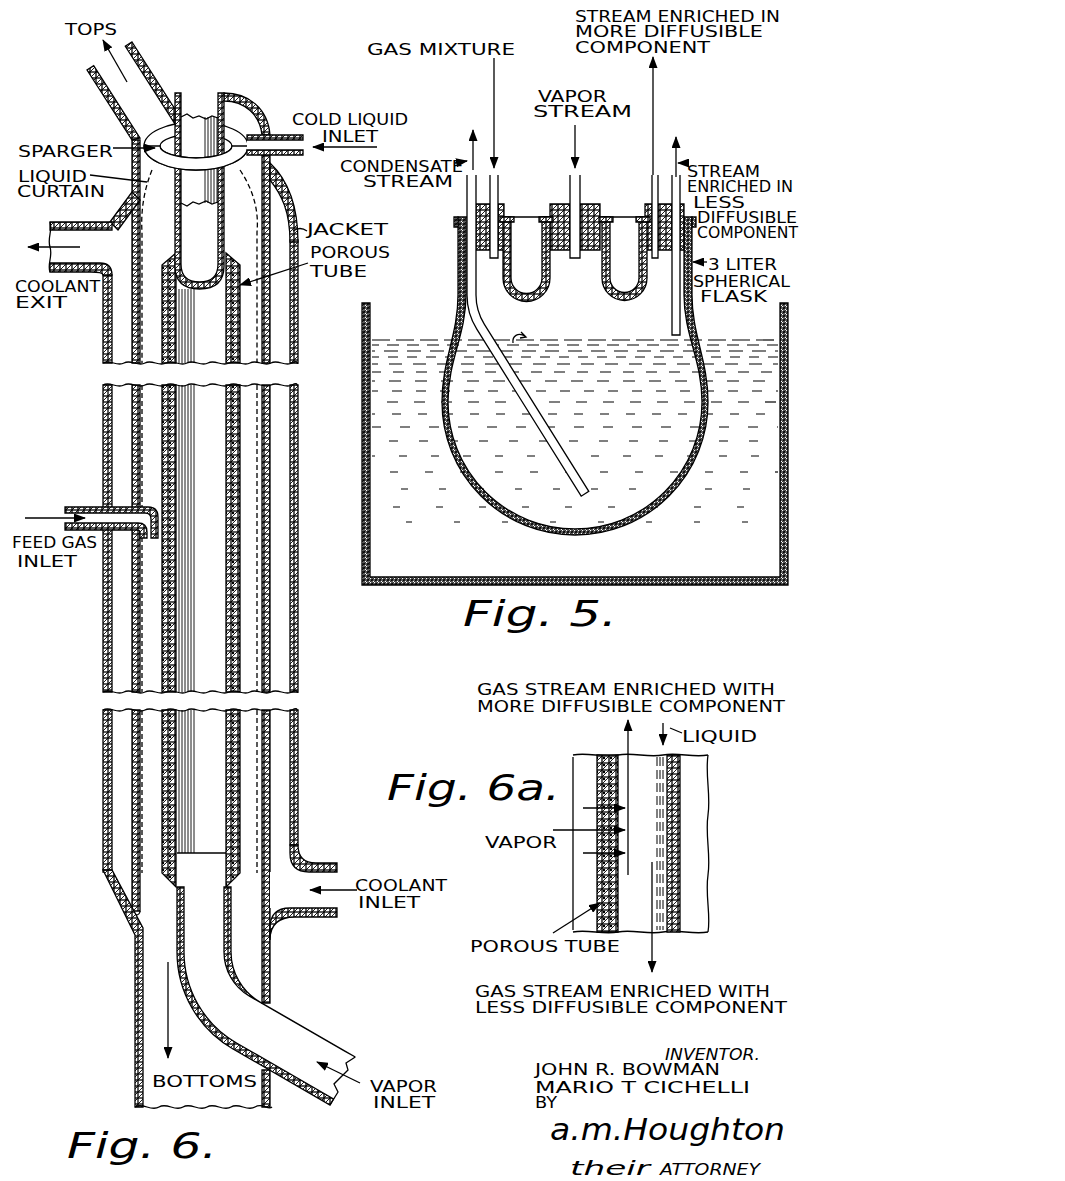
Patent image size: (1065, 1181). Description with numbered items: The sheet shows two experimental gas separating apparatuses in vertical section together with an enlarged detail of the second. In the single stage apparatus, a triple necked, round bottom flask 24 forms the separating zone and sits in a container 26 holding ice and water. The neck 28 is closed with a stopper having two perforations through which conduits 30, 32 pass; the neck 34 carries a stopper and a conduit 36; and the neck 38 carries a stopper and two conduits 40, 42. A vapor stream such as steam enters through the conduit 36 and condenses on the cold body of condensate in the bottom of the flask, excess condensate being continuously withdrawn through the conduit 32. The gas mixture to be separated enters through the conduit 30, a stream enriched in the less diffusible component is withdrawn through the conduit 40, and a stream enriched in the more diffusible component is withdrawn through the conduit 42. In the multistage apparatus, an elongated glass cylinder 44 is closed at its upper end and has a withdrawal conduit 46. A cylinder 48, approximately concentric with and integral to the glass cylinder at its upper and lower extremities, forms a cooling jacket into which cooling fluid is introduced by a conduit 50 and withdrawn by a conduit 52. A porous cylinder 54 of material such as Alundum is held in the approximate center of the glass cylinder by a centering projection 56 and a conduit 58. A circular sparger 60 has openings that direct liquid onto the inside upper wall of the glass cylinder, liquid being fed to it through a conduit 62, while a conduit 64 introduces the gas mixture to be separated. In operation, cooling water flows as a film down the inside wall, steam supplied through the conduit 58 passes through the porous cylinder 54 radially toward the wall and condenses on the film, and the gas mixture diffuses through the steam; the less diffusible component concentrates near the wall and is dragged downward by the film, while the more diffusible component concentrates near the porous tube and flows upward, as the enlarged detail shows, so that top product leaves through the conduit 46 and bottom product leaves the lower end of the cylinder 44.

In FIG. 5, the triple necked round bottom flask 24 is at (694, 313).
In FIG. 5, the container 26 is at (362, 418).
In FIG. 5, the neck 28 is at (526, 259).
In FIG. 5, the conduit 30 is at (498, 190).
In FIG. 5, the conduit 32 is at (470, 187).
In FIG. 5, the neck 34 is at (624, 259).
In FIG. 5, the conduit 36 is at (580, 183).
In FIG. 5, the neck 38 is at (692, 249).
In FIG. 5, the conduit 40 is at (672, 190).
In FIG. 5, the conduit 42 is at (652, 201).
In FIG. 6, the elongated glass cylinder 44 is at (267, 539).
In FIG. 6A, the elongated glass cylinder 44 is at (680, 813).
In FIG. 6, the withdrawal conduit 46 is at (148, 58).
In FIG. 6, the cylinder 48 is at (300, 742).
In FIG. 6, the conduit 50 is at (328, 866).
In FIG. 6, the conduit 52 is at (60, 230).
In FIG. 6, the porous cylinder 54 is at (238, 585).
In FIG. 6A, the porous cylinder 54 is at (598, 882).
In FIG. 6, the centering projection 56 is at (228, 230).
In FIG. 6, the conduit 58 is at (231, 959).
In FIG. 6, the circular sparger 60 is at (200, 160).
In FIG. 6, the conduit 62 is at (273, 156).
In FIG. 6, the conduit 64 is at (82, 506).